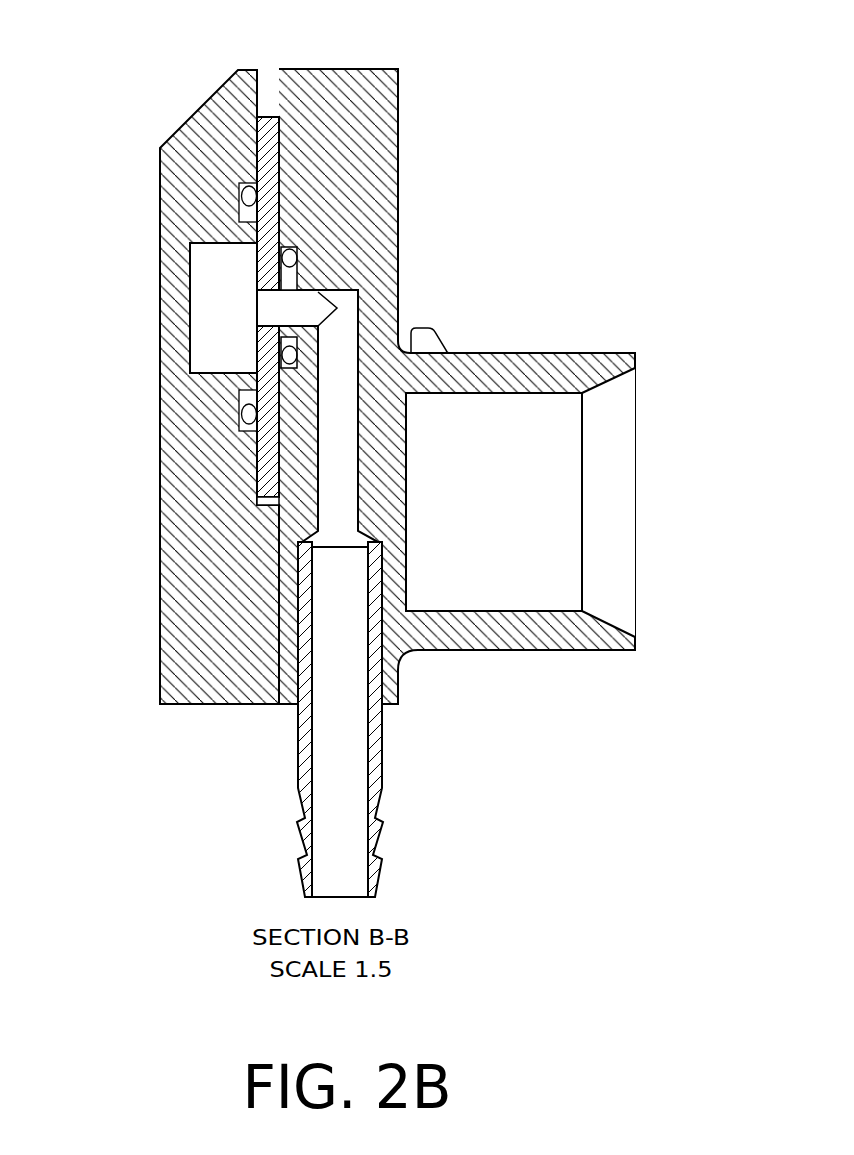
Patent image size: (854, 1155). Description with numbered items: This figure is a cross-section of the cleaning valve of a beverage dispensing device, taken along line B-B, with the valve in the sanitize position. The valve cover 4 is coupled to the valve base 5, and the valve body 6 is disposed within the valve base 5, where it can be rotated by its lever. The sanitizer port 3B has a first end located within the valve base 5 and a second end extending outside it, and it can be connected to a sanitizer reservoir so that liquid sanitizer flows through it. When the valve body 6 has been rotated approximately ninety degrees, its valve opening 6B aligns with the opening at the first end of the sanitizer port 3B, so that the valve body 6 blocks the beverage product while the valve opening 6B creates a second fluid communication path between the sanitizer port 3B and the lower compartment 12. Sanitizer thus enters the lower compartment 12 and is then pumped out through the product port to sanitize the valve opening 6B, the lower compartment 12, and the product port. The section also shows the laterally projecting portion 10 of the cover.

The valve cover 4 is at (398, 109).
The valve base 5 is at (158, 218).
The valve body 6 is at (267, 125).
The valve opening 6B is at (268, 306).
The outlet port 10 is at (635, 628).
The lower compartment 12 is at (197, 344).
The sanitizer port 3B is at (379, 880).